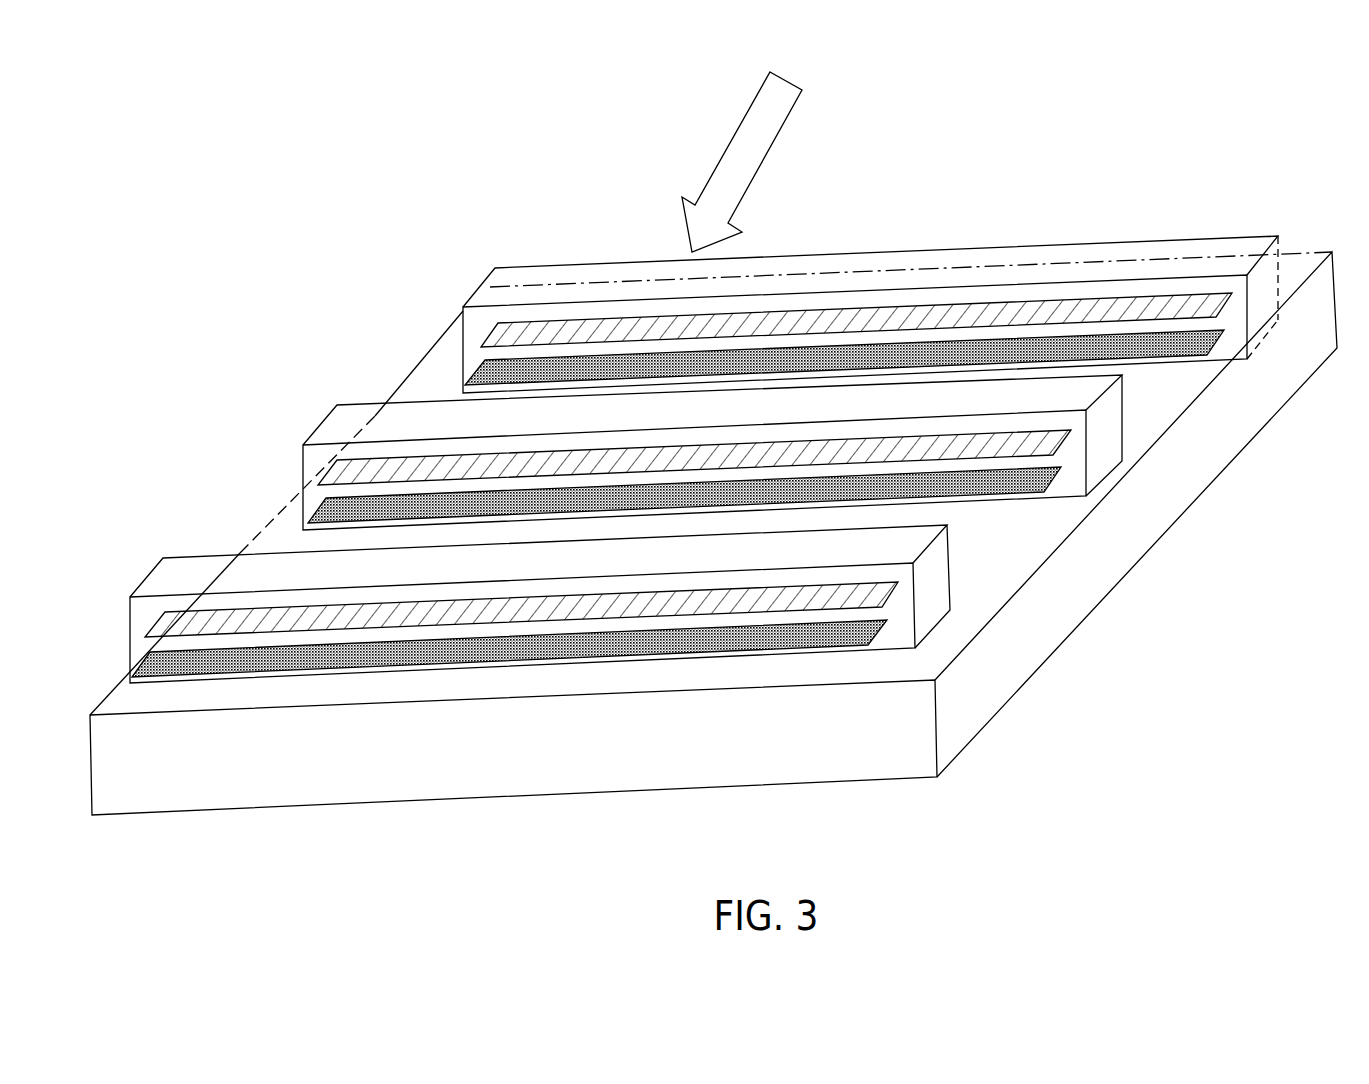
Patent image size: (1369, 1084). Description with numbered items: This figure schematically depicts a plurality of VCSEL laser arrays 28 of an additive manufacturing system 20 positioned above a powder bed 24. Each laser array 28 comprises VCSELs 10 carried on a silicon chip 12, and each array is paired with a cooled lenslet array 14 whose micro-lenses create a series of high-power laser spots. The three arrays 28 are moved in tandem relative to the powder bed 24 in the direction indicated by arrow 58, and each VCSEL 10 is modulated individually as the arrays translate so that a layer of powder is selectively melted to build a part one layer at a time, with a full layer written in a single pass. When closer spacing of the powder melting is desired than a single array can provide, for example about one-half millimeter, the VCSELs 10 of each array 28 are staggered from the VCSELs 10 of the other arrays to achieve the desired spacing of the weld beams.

The VCSEL 10 is at (688, 420).
The silicon chip 12 is at (478, 333).
The cooled lenslet array 14 is at (487, 373).
The additive manufacturing system 20 is at (1152, 140).
The powder bed 24 is at (613, 765).
The laser array 28 is at (477, 288).
The arrow 58 is at (768, 155).